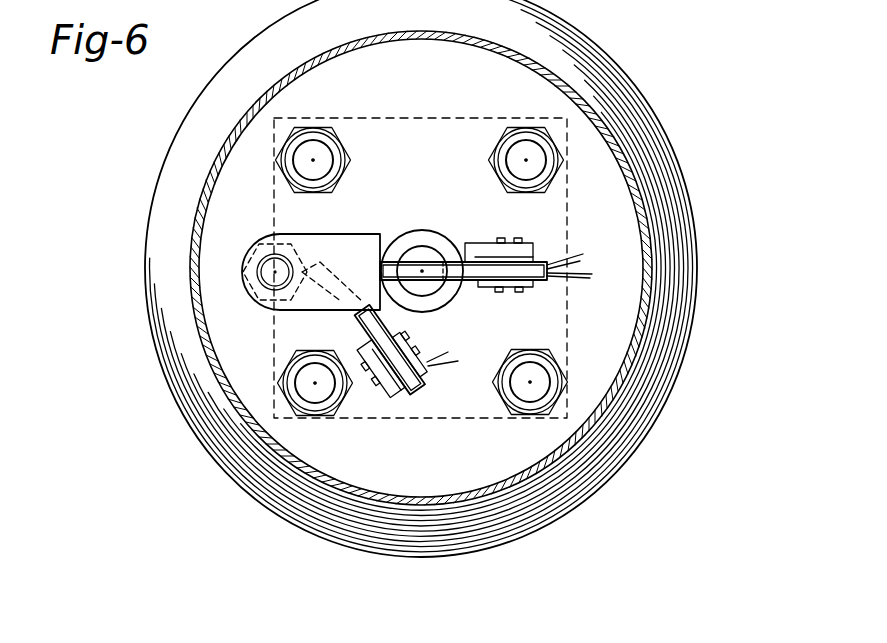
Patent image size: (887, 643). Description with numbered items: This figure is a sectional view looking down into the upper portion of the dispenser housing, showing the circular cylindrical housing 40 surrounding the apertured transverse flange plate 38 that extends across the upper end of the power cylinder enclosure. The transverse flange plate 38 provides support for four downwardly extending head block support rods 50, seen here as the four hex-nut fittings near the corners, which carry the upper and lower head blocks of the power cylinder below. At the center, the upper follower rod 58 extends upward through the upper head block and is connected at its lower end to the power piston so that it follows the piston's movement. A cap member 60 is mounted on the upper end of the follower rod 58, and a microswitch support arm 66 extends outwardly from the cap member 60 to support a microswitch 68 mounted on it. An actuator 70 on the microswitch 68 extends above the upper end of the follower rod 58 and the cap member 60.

The transverse flange plate 38 is at (421, 268).
The cylindrical housing 40 is at (647, 315).
The head block support rods 50 is at (324, 157).
The upper follower rod 58 is at (426, 251).
The cap member 60 is at (418, 231).
The microswitch support arm 66 is at (508, 243).
The microswitch 68 is at (532, 287).
The actuator 70 is at (428, 283).